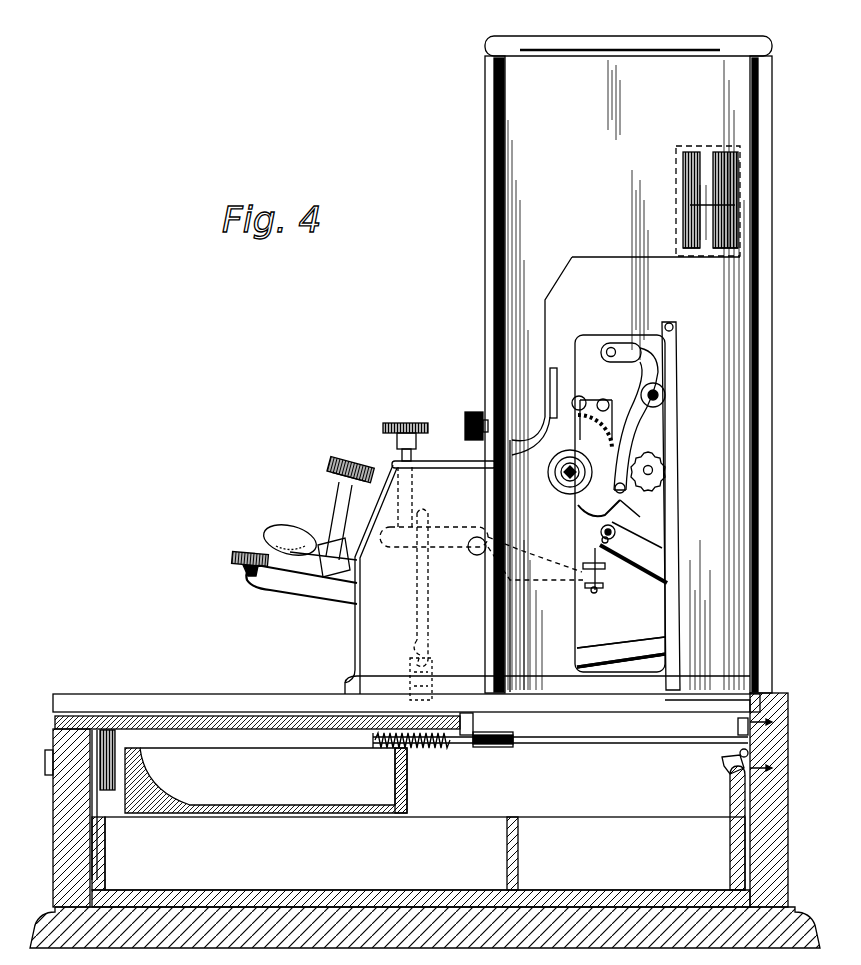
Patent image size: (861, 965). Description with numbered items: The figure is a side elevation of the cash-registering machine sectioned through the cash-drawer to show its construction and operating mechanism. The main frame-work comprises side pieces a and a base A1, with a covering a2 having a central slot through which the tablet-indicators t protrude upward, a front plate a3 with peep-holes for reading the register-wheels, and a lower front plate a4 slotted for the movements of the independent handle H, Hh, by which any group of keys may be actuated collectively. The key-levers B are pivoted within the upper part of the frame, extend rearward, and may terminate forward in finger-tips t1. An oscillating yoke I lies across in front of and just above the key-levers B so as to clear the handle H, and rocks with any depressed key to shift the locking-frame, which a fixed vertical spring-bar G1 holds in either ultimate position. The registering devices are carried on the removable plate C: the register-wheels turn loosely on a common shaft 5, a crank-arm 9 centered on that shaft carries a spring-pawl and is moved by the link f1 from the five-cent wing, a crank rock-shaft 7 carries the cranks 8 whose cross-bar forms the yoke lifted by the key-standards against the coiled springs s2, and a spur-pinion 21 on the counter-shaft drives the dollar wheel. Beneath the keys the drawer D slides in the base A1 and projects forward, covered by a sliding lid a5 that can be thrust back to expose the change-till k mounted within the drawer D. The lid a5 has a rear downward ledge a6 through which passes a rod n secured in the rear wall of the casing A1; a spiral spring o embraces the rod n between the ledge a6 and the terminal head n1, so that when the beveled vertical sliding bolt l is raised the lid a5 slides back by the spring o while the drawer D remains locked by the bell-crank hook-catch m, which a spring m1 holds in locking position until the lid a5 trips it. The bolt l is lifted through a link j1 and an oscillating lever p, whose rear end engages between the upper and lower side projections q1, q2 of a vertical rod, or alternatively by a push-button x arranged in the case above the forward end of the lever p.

The side pieces a is at (628, 364).
The covering a2 is at (678, 146).
The front plate a3 is at (548, 432).
The lower front plate a4 is at (355, 622).
The sliding cover a5 is at (246, 714).
The downward ledge a6 is at (476, 730).
The tablet-indicators t is at (716, 210).
The finger-tips t1 is at (338, 482).
The spring-bar G1 is at (674, 500).
The plate C is at (550, 385).
The link f1 is at (640, 374).
The shaft 5 is at (561, 480).
The spur-pinion 21 is at (654, 468).
The crank-arm 9 is at (578, 518).
The crank rock-shaft 7 is at (614, 530).
The cranks 8 is at (642, 562).
The springs s2 is at (600, 566).
The upper side projection q1 is at (606, 588).
The lower side projection q2 is at (596, 592).
The oscillating yoke I is at (606, 645).
The handle H is at (622, 660).
The oscillating lever p is at (440, 548).
The link j1 is at (428, 610).
The sliding bolt l is at (436, 702).
The push-button x is at (405, 422).
The handle Hh is at (282, 537).
The key-levers B is at (332, 592).
The drawer D is at (55, 836).
The base A1 is at (778, 800).
The change-till k is at (262, 770).
The spiral spring o is at (410, 752).
The rod n is at (586, 742).
The terminal head n1 is at (374, 740).
The spring m1 is at (736, 733).
The bell-crank hook-catch m is at (722, 760).